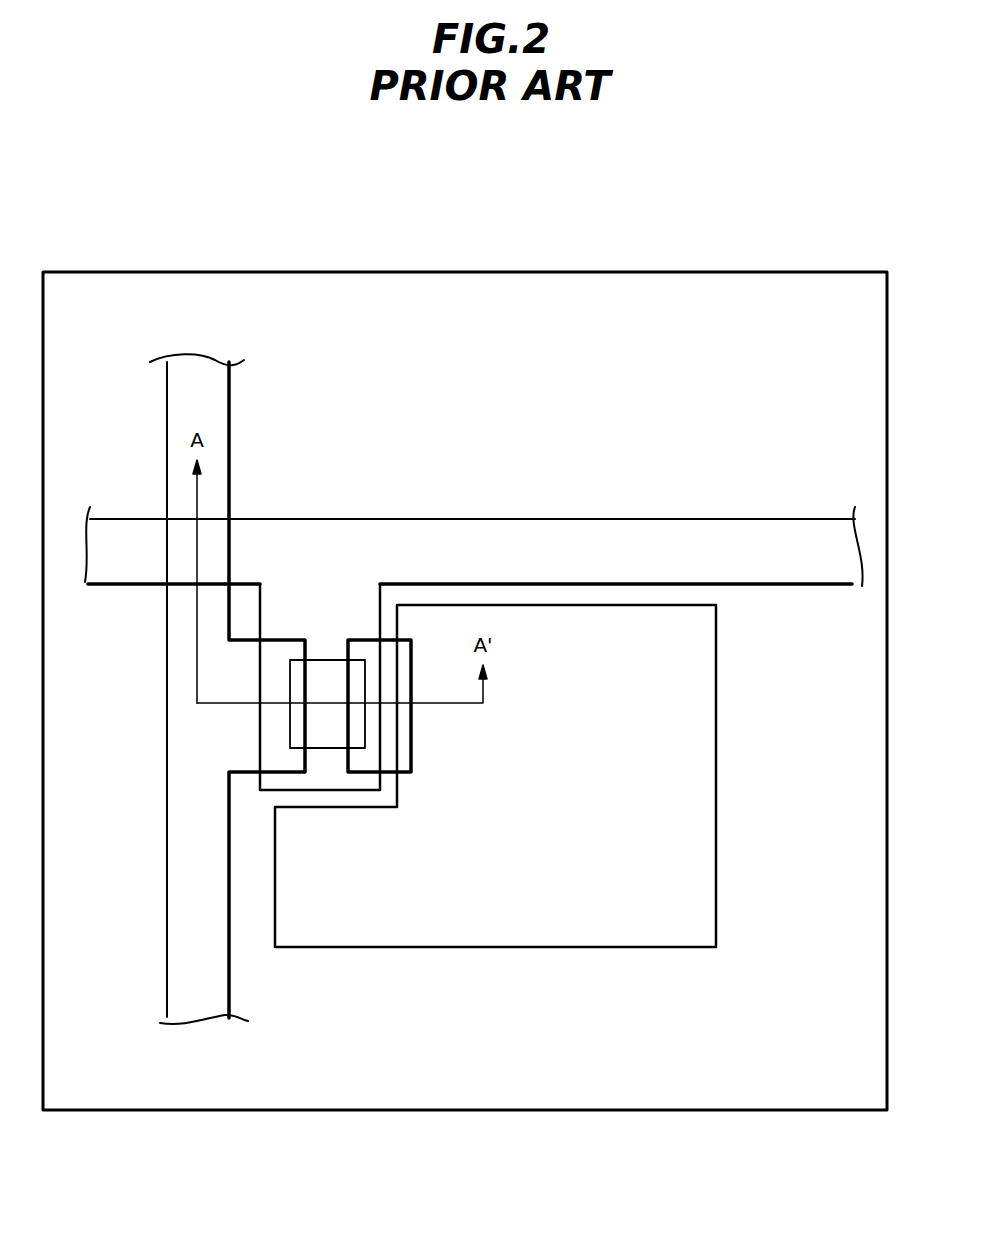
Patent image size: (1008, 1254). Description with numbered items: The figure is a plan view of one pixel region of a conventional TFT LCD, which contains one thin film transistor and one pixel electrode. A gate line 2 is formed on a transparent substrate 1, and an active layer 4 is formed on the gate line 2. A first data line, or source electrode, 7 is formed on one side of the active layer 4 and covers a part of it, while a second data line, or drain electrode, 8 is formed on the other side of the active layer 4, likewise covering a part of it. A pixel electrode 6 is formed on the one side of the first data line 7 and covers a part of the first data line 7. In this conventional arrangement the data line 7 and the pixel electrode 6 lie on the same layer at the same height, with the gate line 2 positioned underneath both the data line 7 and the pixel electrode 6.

The transparent substrate 1 is at (813, 305).
The gate line 2 is at (752, 543).
The active layer 4 is at (325, 728).
The pixel electrode 6 is at (693, 773).
The first data line (source electrode) 7 is at (403, 728).
The second data line (drain electrode) 8 is at (192, 840).